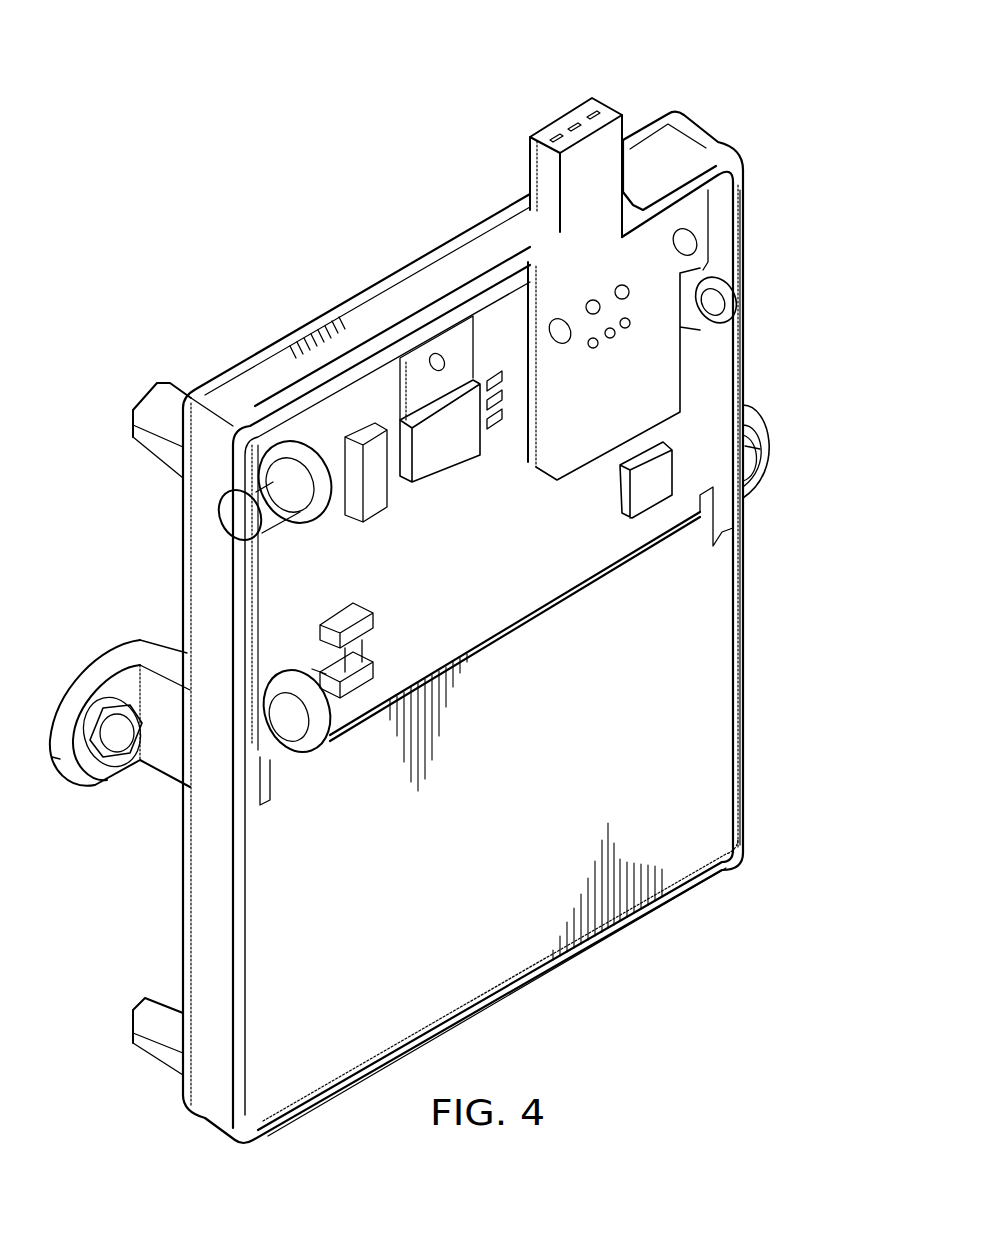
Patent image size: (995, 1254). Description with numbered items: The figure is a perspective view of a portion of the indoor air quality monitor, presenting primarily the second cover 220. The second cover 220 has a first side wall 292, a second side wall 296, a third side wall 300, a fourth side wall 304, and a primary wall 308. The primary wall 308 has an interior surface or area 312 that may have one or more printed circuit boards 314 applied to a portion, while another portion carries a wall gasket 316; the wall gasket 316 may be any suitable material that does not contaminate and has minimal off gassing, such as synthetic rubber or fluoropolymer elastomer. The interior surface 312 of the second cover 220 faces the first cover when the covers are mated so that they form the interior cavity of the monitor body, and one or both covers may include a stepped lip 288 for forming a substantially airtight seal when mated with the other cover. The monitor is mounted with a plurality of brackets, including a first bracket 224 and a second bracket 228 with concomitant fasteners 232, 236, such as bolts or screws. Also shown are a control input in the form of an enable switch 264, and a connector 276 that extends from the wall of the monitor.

The second cover 220 is at (704, 126).
The first bracket 224 is at (102, 664).
The second bracket 228 is at (770, 447).
The fastener 232 is at (127, 741).
The fastener 236 is at (752, 473).
The enable switch 264 is at (213, 508).
The connector 276 is at (561, 114).
The stepped lip 288 is at (262, 593).
The first side wall 292 is at (203, 892).
The second side wall 296 is at (382, 306).
The third side wall 300 is at (744, 648).
The fourth side wall 304 is at (594, 940).
The primary wall 308 is at (515, 566).
The interior surface 312 is at (496, 507).
The printed circuit board 314 is at (708, 375).
The wall gasket 316 is at (535, 814).